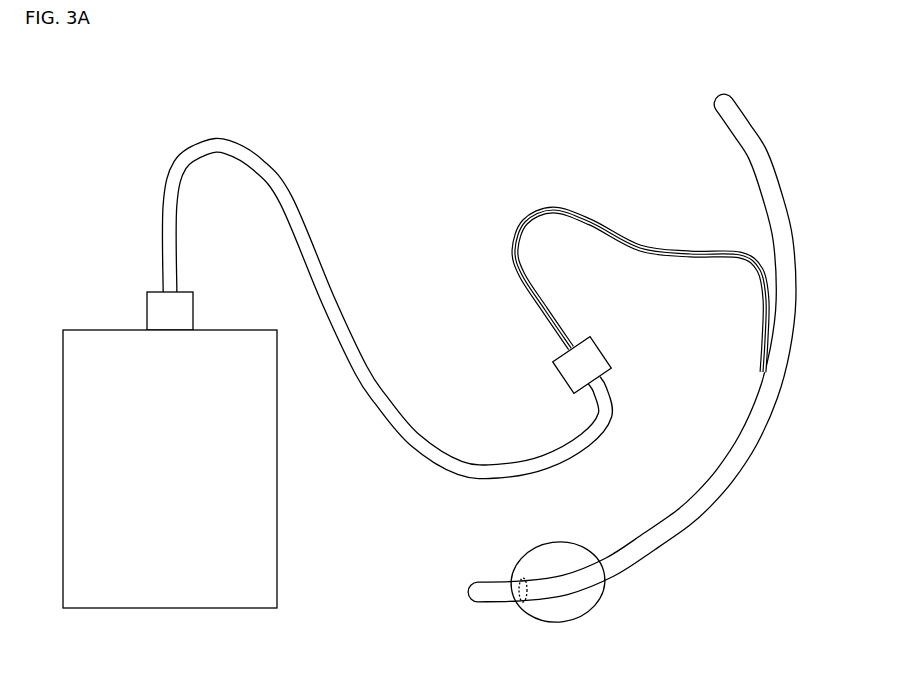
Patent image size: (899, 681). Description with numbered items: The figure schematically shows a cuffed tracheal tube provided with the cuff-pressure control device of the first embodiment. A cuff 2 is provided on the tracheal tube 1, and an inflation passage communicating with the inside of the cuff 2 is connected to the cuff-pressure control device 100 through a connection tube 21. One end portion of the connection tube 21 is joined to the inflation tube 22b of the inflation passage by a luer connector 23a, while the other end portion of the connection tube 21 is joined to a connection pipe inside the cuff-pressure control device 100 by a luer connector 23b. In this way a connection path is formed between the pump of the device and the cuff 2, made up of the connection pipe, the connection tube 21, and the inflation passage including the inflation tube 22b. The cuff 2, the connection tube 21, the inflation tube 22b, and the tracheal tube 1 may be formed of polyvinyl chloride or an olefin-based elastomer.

The tracheal tube 1 is at (752, 147).
The cuff 2 is at (578, 600).
The connection tube 21 is at (421, 443).
The inflation tube 22b is at (661, 250).
The luer connector 23a is at (598, 357).
The luer connector 23b is at (155, 312).
The cuff-pressure control device 100 is at (171, 595).